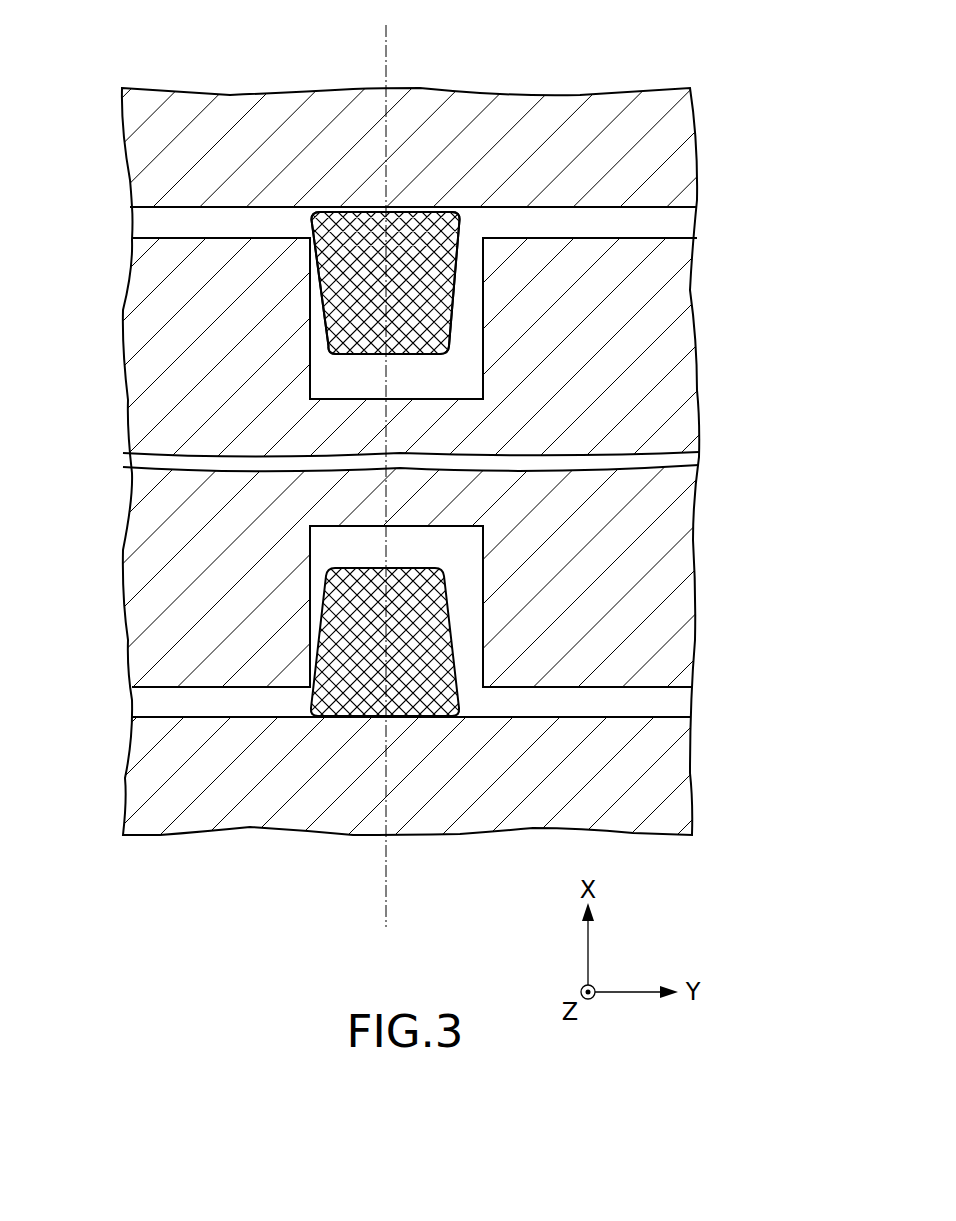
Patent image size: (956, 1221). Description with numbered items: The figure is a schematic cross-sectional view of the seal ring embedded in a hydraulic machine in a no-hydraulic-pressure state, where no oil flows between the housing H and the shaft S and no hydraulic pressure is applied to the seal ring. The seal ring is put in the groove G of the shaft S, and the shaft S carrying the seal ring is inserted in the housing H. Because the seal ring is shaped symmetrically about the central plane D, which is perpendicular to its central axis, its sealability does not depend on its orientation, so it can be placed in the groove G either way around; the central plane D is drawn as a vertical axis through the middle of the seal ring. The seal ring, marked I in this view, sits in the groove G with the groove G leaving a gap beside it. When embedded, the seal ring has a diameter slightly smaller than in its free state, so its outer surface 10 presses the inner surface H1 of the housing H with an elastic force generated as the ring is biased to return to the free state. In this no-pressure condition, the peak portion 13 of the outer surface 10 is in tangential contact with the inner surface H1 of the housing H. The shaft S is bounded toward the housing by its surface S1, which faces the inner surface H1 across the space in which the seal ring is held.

The outer surface 10 is at (428, 166).
The peak portion 13 is at (427, 168).
The groove G is at (472, 236).
The housing H is at (585, 165).
The inner surface H1 is at (678, 208).
The shaft S is at (583, 363).
The surface of semiconductor region S1 is at (652, 236).
The insulating member I is at (397, 297).
The central plane D is at (386, 463).